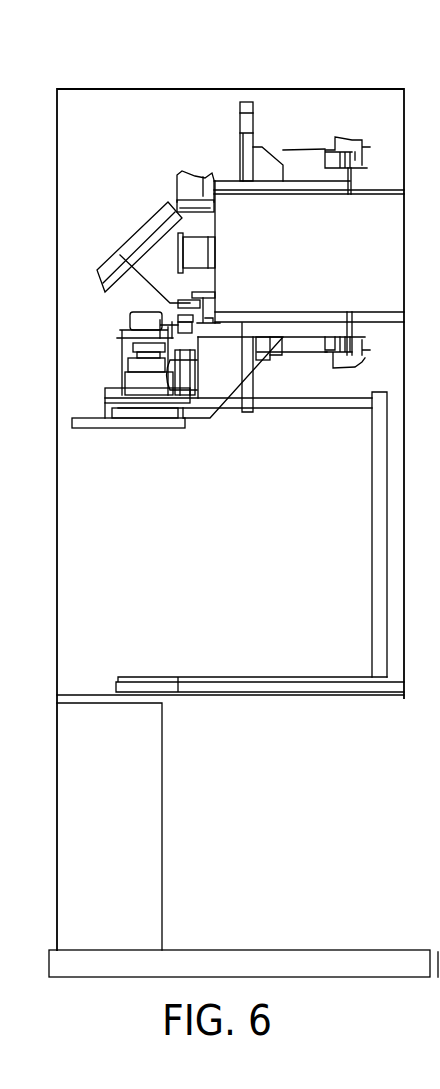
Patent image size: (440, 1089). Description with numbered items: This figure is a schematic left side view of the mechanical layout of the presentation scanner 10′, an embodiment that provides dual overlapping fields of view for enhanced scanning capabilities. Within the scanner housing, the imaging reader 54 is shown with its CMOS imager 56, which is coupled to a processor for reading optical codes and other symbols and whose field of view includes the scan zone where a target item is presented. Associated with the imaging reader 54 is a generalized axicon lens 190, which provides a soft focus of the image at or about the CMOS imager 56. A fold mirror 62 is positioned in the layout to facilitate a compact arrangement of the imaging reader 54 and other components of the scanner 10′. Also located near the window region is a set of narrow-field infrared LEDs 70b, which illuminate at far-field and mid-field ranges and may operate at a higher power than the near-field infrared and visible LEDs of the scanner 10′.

The presentation scanner 10′ is at (386, 71).
The narrow-field infrared LEDs 70b is at (347, 140).
The fold mirror 62 is at (128, 237).
The axicon lens 190 is at (140, 322).
The imaging reader 54 is at (94, 382).
The CMOS imager 56 is at (147, 413).